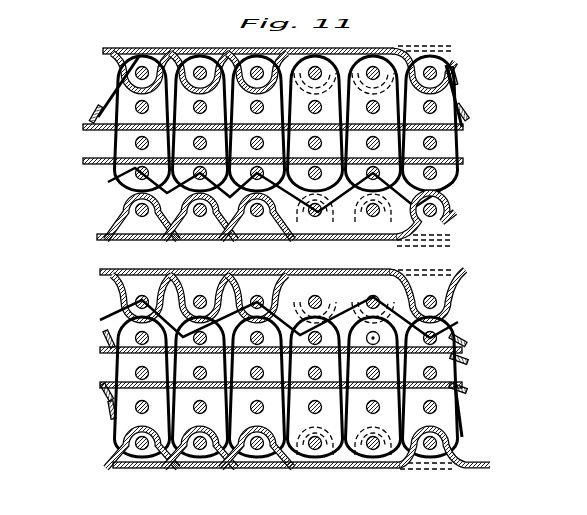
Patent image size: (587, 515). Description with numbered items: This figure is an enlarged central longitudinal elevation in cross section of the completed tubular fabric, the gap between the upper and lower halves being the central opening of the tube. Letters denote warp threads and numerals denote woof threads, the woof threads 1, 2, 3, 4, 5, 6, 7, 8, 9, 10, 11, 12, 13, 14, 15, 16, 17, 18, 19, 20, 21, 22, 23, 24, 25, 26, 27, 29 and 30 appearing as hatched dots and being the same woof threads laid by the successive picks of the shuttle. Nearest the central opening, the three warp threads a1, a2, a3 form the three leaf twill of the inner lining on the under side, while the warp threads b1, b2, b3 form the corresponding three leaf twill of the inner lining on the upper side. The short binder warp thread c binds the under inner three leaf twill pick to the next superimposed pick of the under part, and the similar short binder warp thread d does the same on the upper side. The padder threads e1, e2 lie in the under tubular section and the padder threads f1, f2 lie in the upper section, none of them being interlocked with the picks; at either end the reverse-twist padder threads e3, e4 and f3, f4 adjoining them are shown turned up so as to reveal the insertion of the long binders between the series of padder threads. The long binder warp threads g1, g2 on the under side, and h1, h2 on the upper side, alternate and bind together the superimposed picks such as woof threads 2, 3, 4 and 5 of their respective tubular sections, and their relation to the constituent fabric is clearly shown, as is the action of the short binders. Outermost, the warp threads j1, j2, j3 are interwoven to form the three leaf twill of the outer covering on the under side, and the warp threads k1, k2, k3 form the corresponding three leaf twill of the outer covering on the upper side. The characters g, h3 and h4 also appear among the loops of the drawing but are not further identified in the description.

The woof thread 1 is at (141, 296).
The woof thread 2 is at (140, 218).
The woof thread 3 is at (135, 373).
The woof thread 4 is at (135, 143).
The woof thread 5 is at (149, 373).
The woof thread 6 is at (149, 143).
The woof thread 7 is at (149, 407).
The woof thread 8 is at (149, 107).
The woof thread 9 is at (144, 437).
The woof thread 10 is at (141, 67).
The woof thread 11 is at (202, 437).
The woof thread 12 is at (203, 67).
The woof thread 13 is at (207, 407).
The woof thread 14 is at (207, 107).
The woof thread 15 is at (207, 373).
The woof thread 16 is at (207, 143).
The woof thread 17 is at (188, 360).
The woof thread 18 is at (251, 145).
The woof thread 19 is at (250, 302).
The woof thread 20 is at (200, 218).
The woof thread 21 is at (315, 295).
The woof thread 22 is at (250, 218).
The woof thread 23 is at (248, 362).
The woof thread 24 is at (309, 145).
The woof thread 25 is at (264, 108).
The woof thread 26 is at (264, 145).
The woof thread 27 is at (250, 407).
The woof thread 29 is at (309, 411).
The woof thread 30 is at (283, 50).
The warp thread a1 is at (100, 272).
The warp thread a2 is at (113, 288).
The warp thread a3 is at (375, 262).
The warp thread b1 is at (97, 238).
The warp thread b2 is at (128, 212).
The warp thread b3 is at (298, 249).
The short binder warp thread c is at (100, 320).
The short binder warp thread d is at (108, 182).
The padder thread e1 is at (105, 351).
The padder thread e2 is at (102, 384).
The reverse padder thread e3 is at (105, 332).
The reverse padder thread e4 is at (110, 412).
The padder thread f1 is at (100, 168).
The padder thread f2 is at (83, 126).
The reverse padder thread f3 is at (83, 161).
The reverse padder thread f4 is at (95, 105).
The needle loop g is at (110, 345).
The long binder warp thread g1 is at (458, 437).
The long binder warp thread g2 is at (104, 392).
The long binder warp thread h1 is at (172, 62).
The long binder warp thread h2 is at (458, 82).
The needle loop h3 is at (190, 96).
The needle loop h4 is at (250, 94).
The warp thread j1 is at (260, 432).
The warp thread j2 is at (115, 452).
The warp thread j3 is at (198, 428).
The warp thread k1 is at (167, 57).
The warp thread k2 is at (105, 52).
The warp thread k3 is at (262, 55).